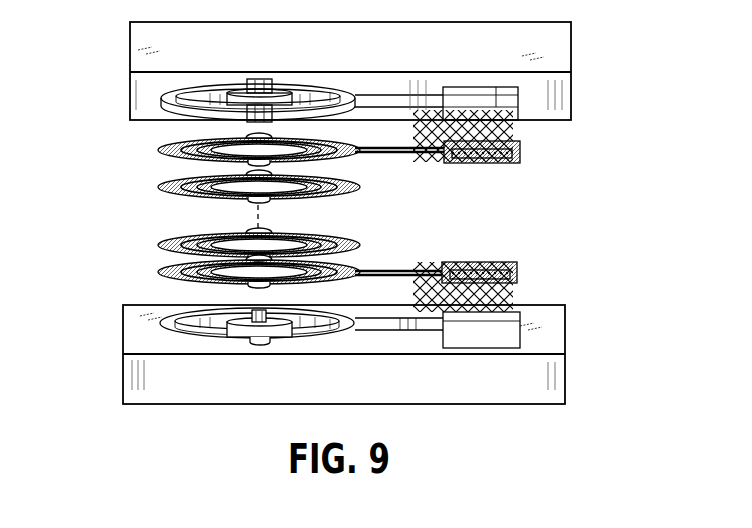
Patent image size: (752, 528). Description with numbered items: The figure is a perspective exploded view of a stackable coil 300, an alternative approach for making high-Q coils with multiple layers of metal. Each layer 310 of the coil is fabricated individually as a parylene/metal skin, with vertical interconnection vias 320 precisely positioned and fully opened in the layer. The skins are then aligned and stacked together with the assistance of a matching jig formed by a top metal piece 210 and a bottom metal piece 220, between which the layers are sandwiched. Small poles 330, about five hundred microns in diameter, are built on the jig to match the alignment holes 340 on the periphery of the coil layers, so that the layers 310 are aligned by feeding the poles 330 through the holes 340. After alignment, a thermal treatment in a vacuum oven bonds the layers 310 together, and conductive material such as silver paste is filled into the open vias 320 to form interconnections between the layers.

The top metal piece 210 is at (552, 62).
The bottom metal piece 220 is at (562, 367).
The stackable coil 300 is at (591, 142).
The layer 310 is at (362, 247).
The vertical interconnection vias 320 is at (195, 238).
The poles 330 is at (258, 307).
The alignment holes 340 is at (168, 147).